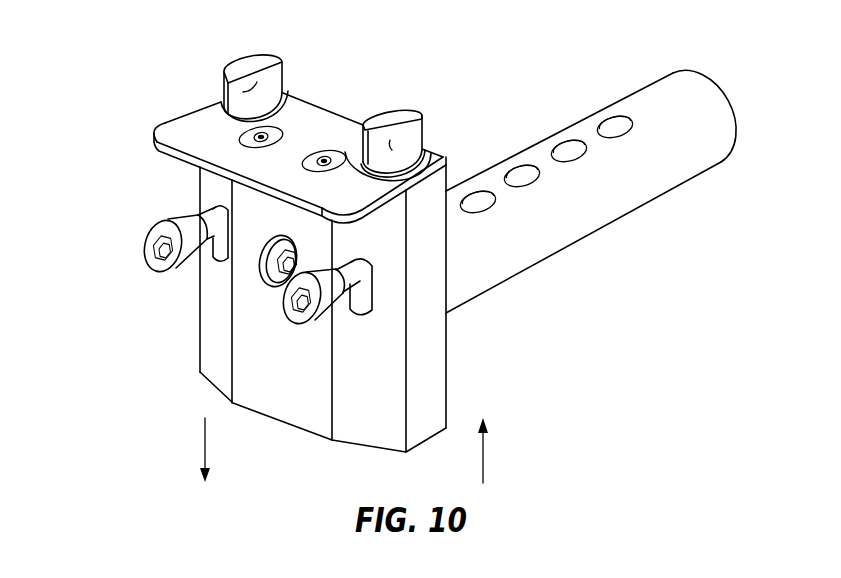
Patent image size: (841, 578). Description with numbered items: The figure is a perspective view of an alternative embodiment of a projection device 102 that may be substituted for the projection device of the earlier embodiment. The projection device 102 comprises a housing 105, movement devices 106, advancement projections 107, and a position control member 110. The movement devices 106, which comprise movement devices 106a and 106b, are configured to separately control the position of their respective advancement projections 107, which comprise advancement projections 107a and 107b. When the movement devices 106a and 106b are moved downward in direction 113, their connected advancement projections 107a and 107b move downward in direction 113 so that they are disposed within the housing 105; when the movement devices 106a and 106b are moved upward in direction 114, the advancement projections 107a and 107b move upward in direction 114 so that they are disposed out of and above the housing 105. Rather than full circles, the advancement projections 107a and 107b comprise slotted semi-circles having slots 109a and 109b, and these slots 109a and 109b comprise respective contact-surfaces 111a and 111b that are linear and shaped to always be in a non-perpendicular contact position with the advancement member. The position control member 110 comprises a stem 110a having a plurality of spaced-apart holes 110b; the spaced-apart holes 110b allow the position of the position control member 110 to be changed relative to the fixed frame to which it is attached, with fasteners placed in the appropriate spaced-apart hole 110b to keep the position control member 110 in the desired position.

The projection device 102 is at (341, 246).
The housing 105 is at (430, 347).
The movement devices 106 is at (212, 346).
The movement device 106a is at (153, 233).
The movement device 106b is at (303, 328).
The advancement projections 107 is at (373, 156).
The advancement projection 107a is at (200, 64).
The advancement projection 107b is at (497, 184).
The slot 109a is at (243, 91).
The slot 109b is at (403, 135).
The position control member 110 is at (591, 171).
The stem 110a is at (655, 95).
The spaced-apart holes 110b is at (495, 193).
The contact-surface 111a is at (257, 82).
The contact-surface 111b is at (390, 140).
The direction 113 is at (205, 460).
The direction 114 is at (484, 452).